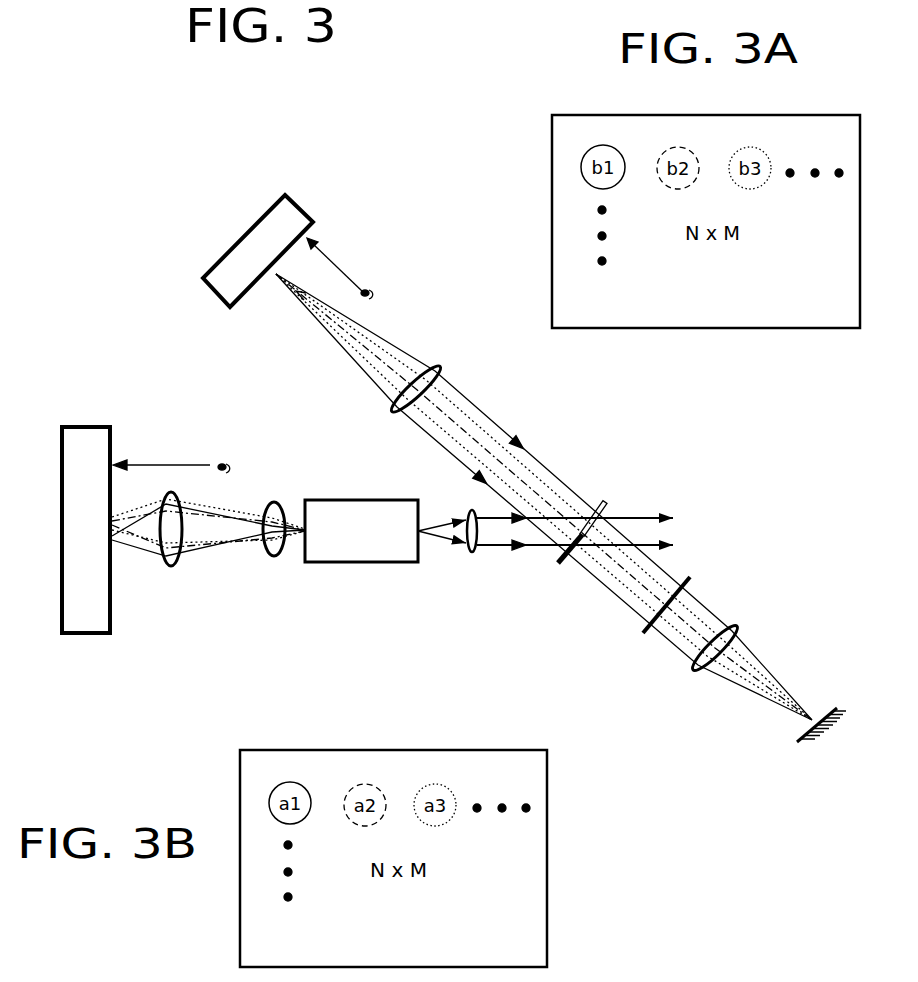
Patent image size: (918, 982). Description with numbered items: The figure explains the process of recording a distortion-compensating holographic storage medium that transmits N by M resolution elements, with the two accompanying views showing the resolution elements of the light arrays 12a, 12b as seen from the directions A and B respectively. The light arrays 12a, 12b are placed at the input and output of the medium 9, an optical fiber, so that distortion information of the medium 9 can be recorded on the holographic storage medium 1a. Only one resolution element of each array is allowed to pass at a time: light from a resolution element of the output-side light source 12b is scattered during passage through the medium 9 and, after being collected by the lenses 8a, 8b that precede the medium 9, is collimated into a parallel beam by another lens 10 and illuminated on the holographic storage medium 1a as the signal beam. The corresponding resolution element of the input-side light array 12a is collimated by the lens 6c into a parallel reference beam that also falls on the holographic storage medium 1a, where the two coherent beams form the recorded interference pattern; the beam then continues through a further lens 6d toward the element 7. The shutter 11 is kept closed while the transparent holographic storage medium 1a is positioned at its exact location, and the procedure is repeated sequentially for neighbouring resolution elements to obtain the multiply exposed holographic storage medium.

The light array 12a is at (262, 183).
The light array 12b is at (93, 645).
The lens 6c is at (442, 359).
The lens 6d is at (735, 608).
The holographic storage medium 1a is at (605, 488).
The diffraction grating / reflecting element 7 is at (827, 693).
The lens 8a is at (177, 581).
The lens 8b is at (281, 572).
The medium 9 is at (365, 575).
The lens 10 is at (478, 571).
The shutter 11 is at (648, 649).
The direction A is at (333, 262).
The direction B is at (163, 462).